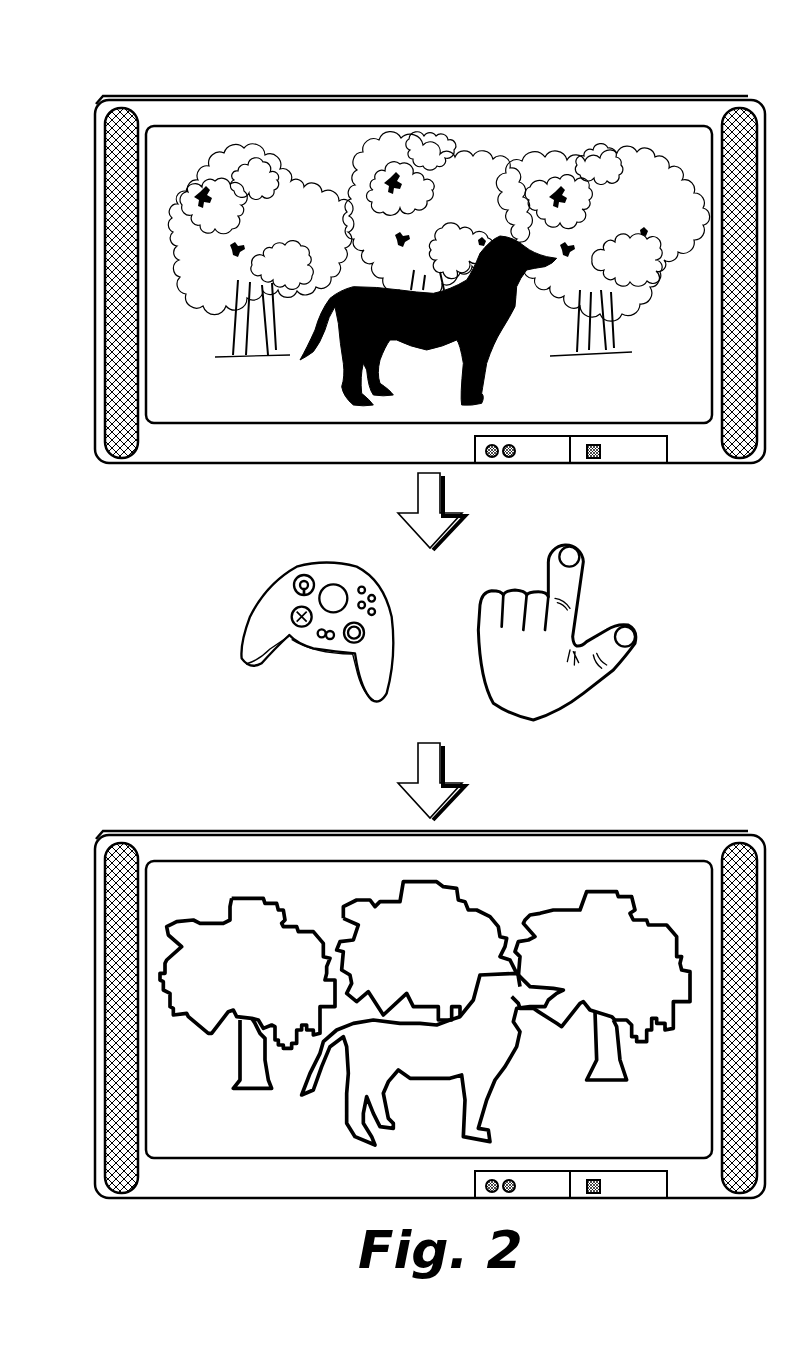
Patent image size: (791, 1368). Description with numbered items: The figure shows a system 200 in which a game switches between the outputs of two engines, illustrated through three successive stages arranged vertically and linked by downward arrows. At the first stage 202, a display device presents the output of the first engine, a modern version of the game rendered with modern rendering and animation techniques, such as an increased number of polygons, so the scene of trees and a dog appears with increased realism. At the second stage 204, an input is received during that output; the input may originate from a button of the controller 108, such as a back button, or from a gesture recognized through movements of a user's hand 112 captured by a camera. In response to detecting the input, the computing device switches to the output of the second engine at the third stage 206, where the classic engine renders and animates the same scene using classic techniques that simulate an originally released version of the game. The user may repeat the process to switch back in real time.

The system 200 is at (138, 68).
The first stage 202 is at (88, 76).
The second stage 204 is at (88, 522).
The controller 108 is at (382, 592).
The user's hand 112 is at (548, 668).
The third stage 206 is at (88, 804).